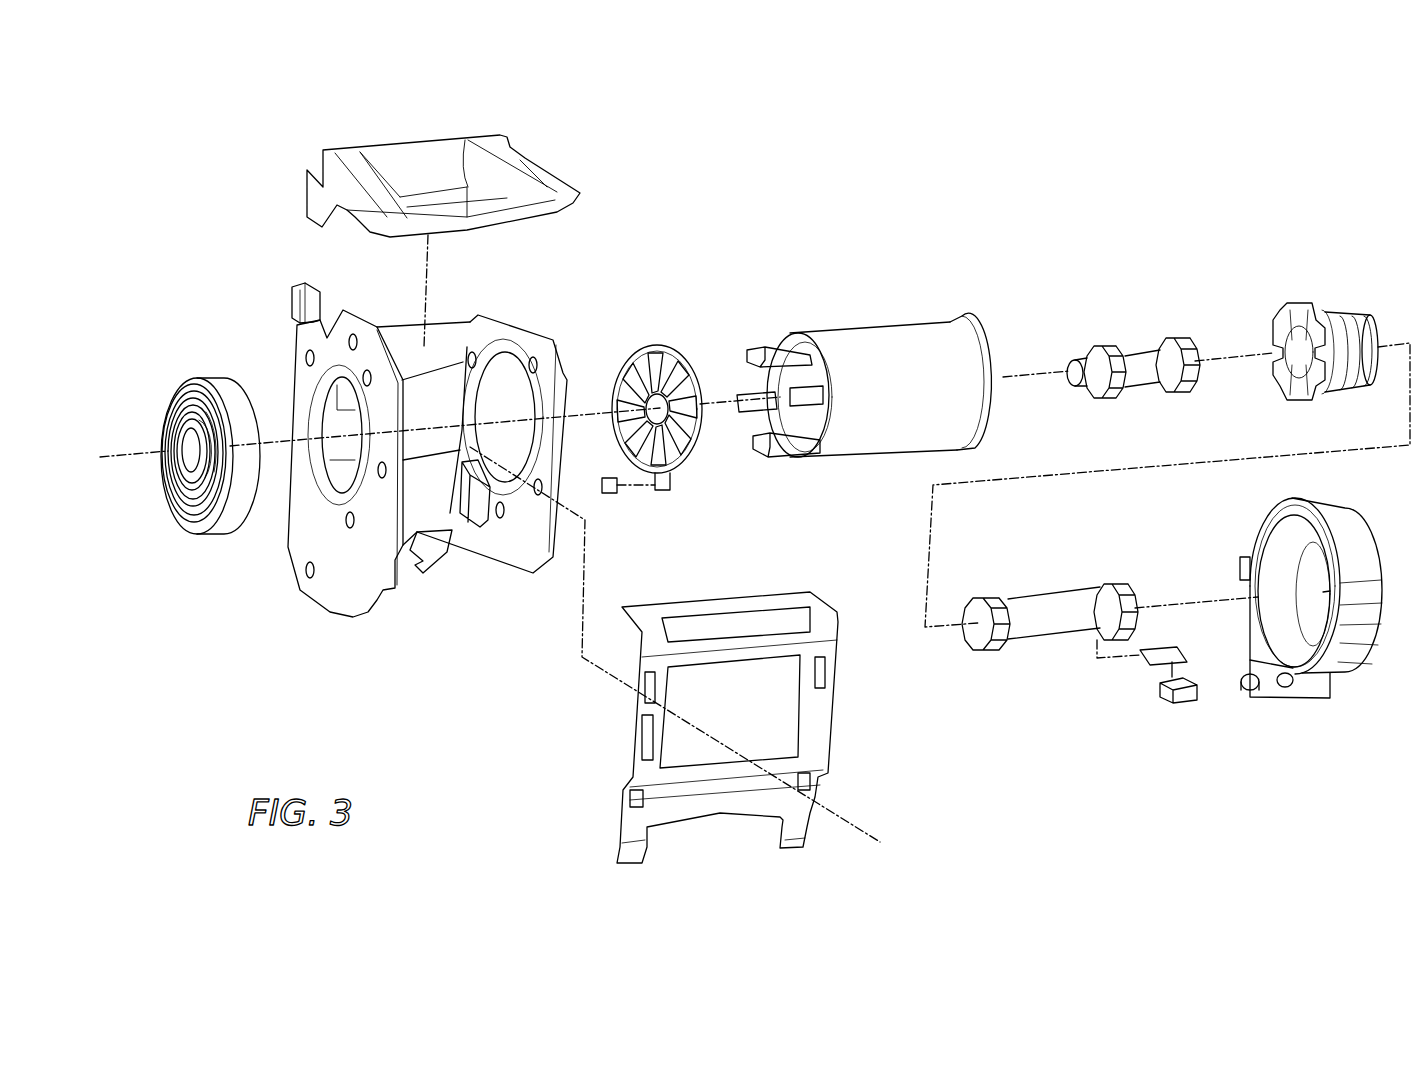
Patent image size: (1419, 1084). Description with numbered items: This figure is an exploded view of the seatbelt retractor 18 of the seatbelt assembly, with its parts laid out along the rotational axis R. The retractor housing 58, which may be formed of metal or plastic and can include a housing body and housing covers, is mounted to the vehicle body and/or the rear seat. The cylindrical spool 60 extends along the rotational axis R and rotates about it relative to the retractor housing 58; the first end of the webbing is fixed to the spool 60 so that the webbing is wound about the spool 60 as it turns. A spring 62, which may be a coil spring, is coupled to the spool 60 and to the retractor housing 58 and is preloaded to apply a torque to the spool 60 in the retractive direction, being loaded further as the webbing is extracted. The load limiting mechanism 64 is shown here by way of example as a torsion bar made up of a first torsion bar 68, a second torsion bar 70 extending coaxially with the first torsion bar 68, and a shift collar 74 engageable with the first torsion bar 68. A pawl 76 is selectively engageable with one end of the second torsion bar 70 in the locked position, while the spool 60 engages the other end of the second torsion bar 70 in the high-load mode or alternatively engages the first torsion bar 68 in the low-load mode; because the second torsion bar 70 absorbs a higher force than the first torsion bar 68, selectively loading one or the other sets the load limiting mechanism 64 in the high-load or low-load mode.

The seatbelt retractor 18 is at (947, 228).
The retractor housing 58 is at (313, 543).
The spool 60 is at (865, 327).
The spring 62 is at (207, 378).
The load limiting mechanism 64 is at (1240, 307).
The first torsion bar 68 is at (1137, 350).
The second torsion bar 70 is at (1037, 638).
The shift collar 74 is at (1370, 337).
The pawl 76 is at (1178, 655).
The rotational axis R is at (115, 455).